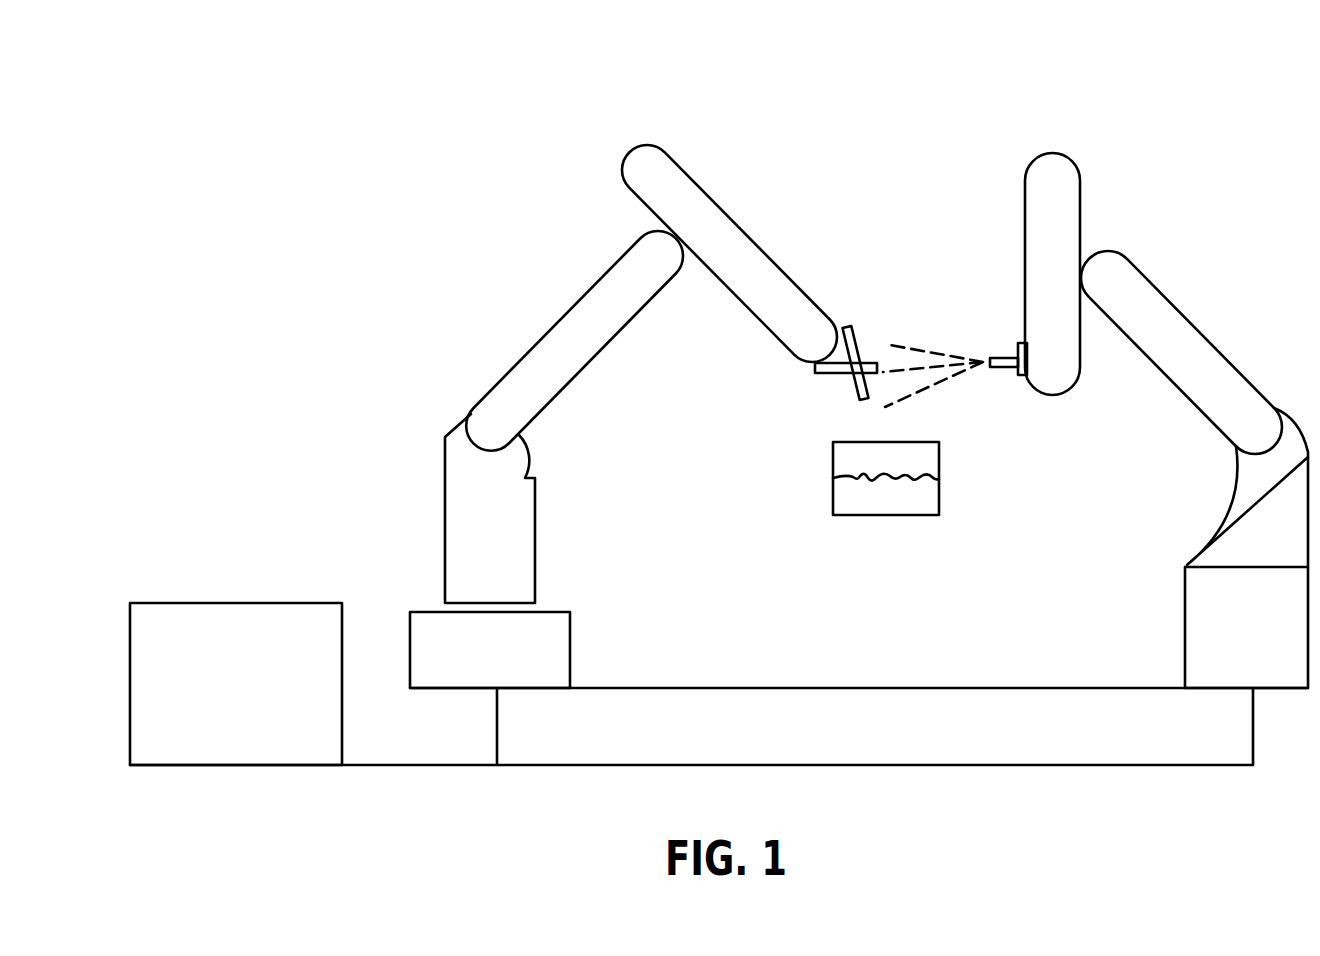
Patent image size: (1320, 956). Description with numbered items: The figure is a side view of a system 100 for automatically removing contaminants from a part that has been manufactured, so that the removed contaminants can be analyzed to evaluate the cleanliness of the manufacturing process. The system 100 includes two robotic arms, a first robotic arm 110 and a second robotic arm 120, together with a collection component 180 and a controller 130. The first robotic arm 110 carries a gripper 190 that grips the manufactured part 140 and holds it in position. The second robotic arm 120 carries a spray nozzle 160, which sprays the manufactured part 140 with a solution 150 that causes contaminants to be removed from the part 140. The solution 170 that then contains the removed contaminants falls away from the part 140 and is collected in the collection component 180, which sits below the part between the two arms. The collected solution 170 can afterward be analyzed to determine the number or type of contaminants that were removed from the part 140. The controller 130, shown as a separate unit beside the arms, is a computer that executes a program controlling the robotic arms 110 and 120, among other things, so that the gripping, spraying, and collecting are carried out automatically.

The system 100 is at (1229, 79).
The first robotic arm 110 is at (622, 163).
The second robotic arm 120 is at (1039, 153).
The controller 130 is at (255, 726).
The manufactured part 140 is at (844, 326).
The solution 150 is at (895, 345).
The spray nozzle 160 is at (993, 357).
The solution 170 is at (887, 495).
The collection component 180 is at (939, 463).
The gripper 190 is at (815, 374).